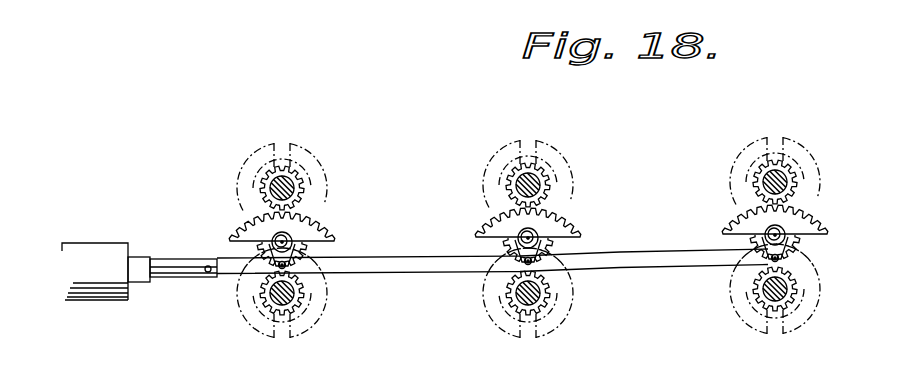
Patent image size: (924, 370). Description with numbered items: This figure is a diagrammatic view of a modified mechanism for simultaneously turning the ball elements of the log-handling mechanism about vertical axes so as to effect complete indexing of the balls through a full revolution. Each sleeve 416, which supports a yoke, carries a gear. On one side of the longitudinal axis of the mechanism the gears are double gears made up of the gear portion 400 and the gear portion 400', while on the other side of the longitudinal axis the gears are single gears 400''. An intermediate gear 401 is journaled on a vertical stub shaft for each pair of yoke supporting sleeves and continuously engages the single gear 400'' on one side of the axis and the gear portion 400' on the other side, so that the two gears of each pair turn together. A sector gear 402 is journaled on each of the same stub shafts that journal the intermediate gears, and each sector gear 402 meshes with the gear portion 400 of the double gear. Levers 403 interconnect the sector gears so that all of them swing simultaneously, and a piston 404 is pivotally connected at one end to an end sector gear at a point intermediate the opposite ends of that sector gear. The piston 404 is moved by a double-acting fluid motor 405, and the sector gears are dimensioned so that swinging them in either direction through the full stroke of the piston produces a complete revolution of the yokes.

The gear portion 400 is at (366, 187).
The gear portion 400' is at (437, 175).
The single gear 400'' is at (405, 293).
The intermediate gear 401 is at (313, 249).
The sector gear 402 is at (250, 239).
The lever 403 is at (670, 267).
The piston 404 is at (182, 278).
The double-acting fluid motor 405 is at (95, 271).
The sleeve 416 is at (273, 306).